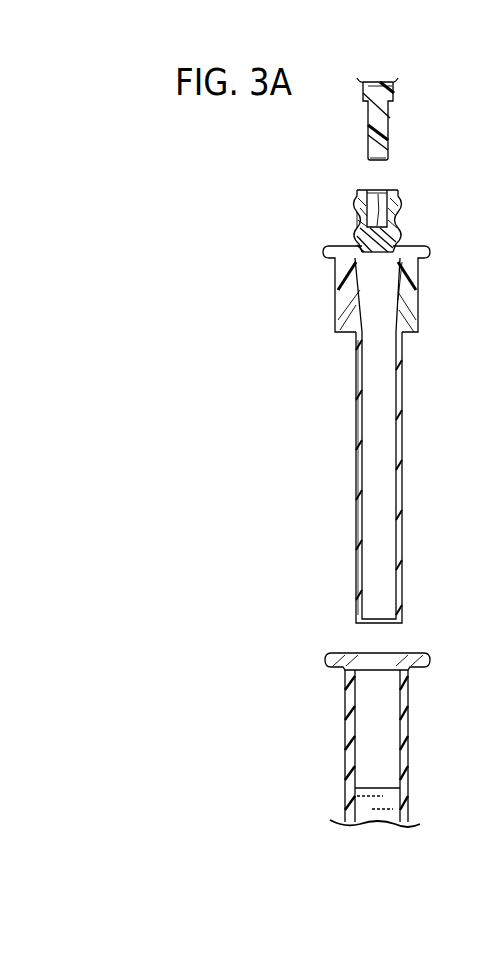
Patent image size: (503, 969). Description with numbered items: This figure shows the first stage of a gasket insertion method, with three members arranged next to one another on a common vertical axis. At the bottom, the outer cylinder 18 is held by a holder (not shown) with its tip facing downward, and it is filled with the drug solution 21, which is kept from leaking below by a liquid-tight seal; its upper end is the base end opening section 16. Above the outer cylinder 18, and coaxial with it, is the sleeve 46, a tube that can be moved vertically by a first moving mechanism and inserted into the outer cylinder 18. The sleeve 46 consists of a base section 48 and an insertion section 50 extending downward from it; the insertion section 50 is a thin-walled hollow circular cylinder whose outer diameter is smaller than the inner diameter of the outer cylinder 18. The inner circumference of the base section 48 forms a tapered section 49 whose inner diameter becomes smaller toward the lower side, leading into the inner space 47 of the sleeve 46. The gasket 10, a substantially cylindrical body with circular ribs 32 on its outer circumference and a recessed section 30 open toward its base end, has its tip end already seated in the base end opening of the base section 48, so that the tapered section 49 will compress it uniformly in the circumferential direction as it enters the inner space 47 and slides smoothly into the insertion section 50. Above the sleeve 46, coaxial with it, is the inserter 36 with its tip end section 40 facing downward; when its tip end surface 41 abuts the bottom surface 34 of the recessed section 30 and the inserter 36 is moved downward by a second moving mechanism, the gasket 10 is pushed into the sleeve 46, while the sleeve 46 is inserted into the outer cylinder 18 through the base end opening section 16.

The gasket 10 is at (399, 213).
The base end opening section 16 is at (362, 662).
The outer cylinder 18 is at (408, 735).
The drug solution 21 is at (383, 800).
The recessed section 30 is at (375, 205).
The circular ribs 32 is at (357, 226).
The bottom surface 34 is at (387, 191).
The inserter 36 is at (382, 97).
The tip end section 40 is at (378, 138).
The tip end surface 41 is at (378, 160).
The sleeve 46 is at (333, 420).
The inner space 47 is at (378, 446).
The base section 48 is at (345, 303).
The tapered section 49 is at (398, 268).
The insertion section 50 is at (356, 505).